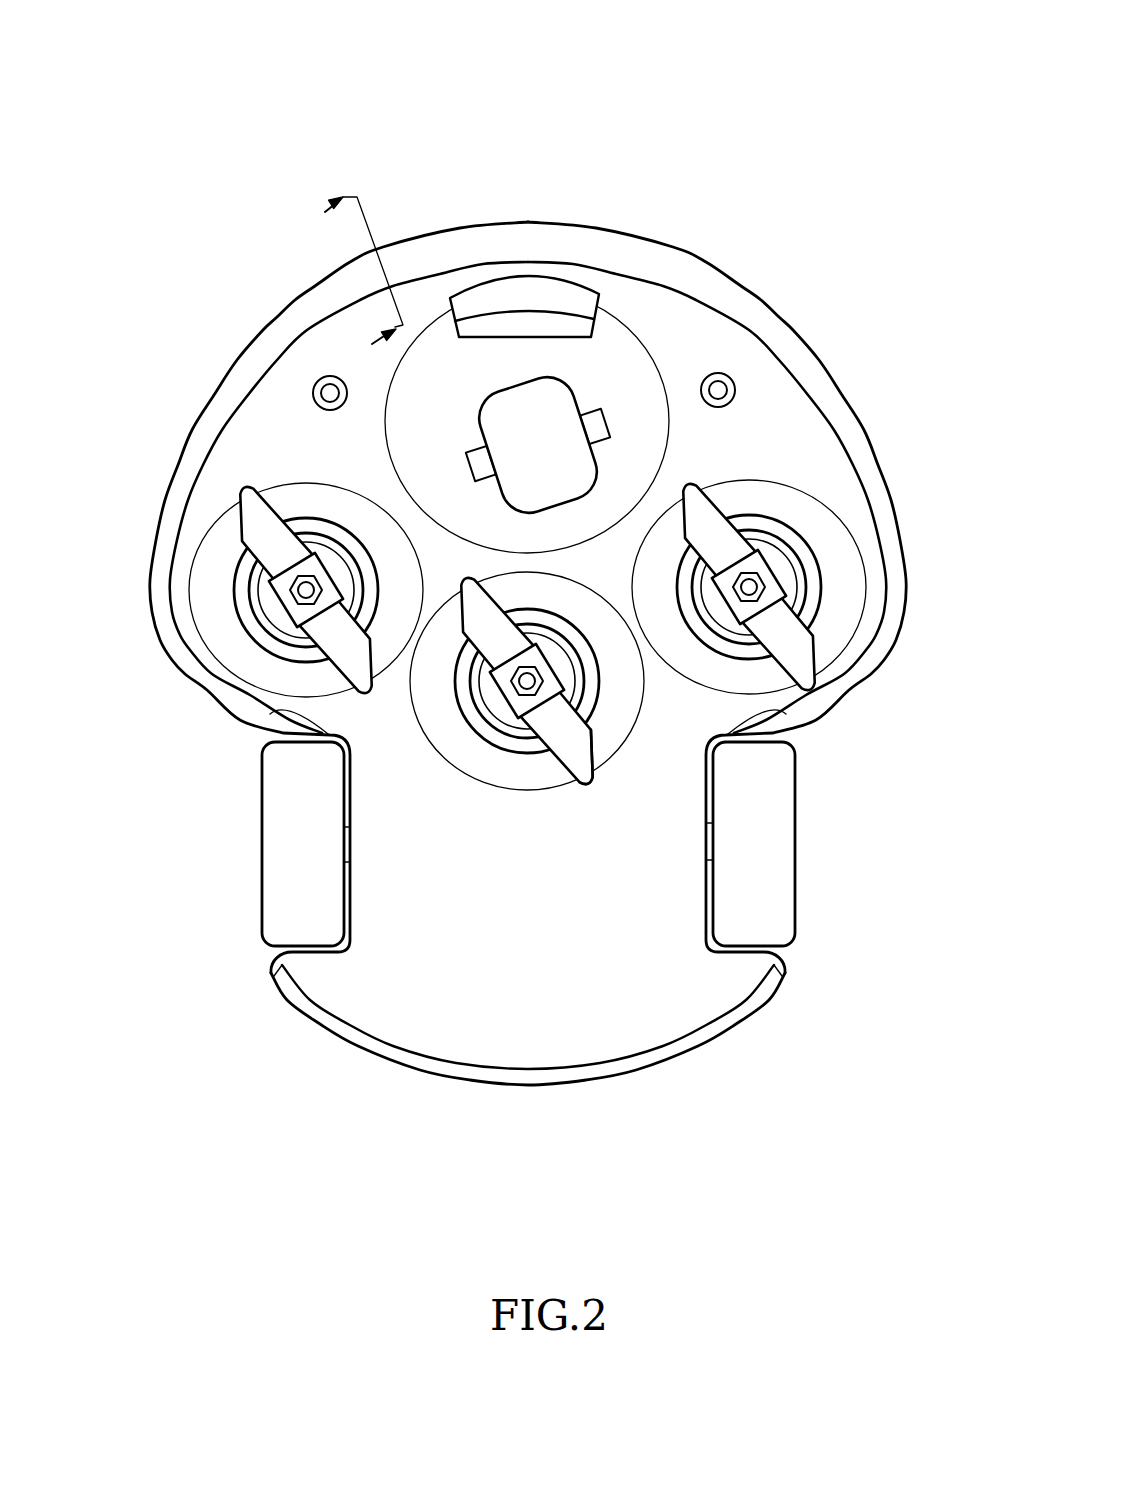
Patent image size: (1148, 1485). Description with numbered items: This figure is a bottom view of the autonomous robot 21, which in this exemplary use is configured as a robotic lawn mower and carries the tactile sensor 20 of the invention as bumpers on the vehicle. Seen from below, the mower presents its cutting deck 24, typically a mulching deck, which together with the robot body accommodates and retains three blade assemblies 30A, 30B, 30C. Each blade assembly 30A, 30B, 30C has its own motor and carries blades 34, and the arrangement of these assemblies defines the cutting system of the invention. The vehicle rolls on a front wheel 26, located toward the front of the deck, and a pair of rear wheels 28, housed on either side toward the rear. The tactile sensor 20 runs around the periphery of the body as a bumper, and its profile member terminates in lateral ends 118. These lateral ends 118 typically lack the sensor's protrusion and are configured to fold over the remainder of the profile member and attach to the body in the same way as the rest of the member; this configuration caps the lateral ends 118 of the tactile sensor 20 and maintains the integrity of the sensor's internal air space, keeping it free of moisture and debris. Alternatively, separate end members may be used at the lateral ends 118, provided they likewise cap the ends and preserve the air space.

The tactile sensor 20 is at (530, 217).
The autonomous robot 21 is at (598, 108).
The cutting deck 24 is at (345, 458).
The front wheel 26 is at (563, 408).
The rear wheels 28 is at (277, 870).
The blade assembly 30A is at (258, 634).
The blade assembly 30B is at (484, 728).
The blade assembly 30C is at (800, 538).
The blades 34 is at (583, 742).
The lateral ends 118 is at (270, 714).